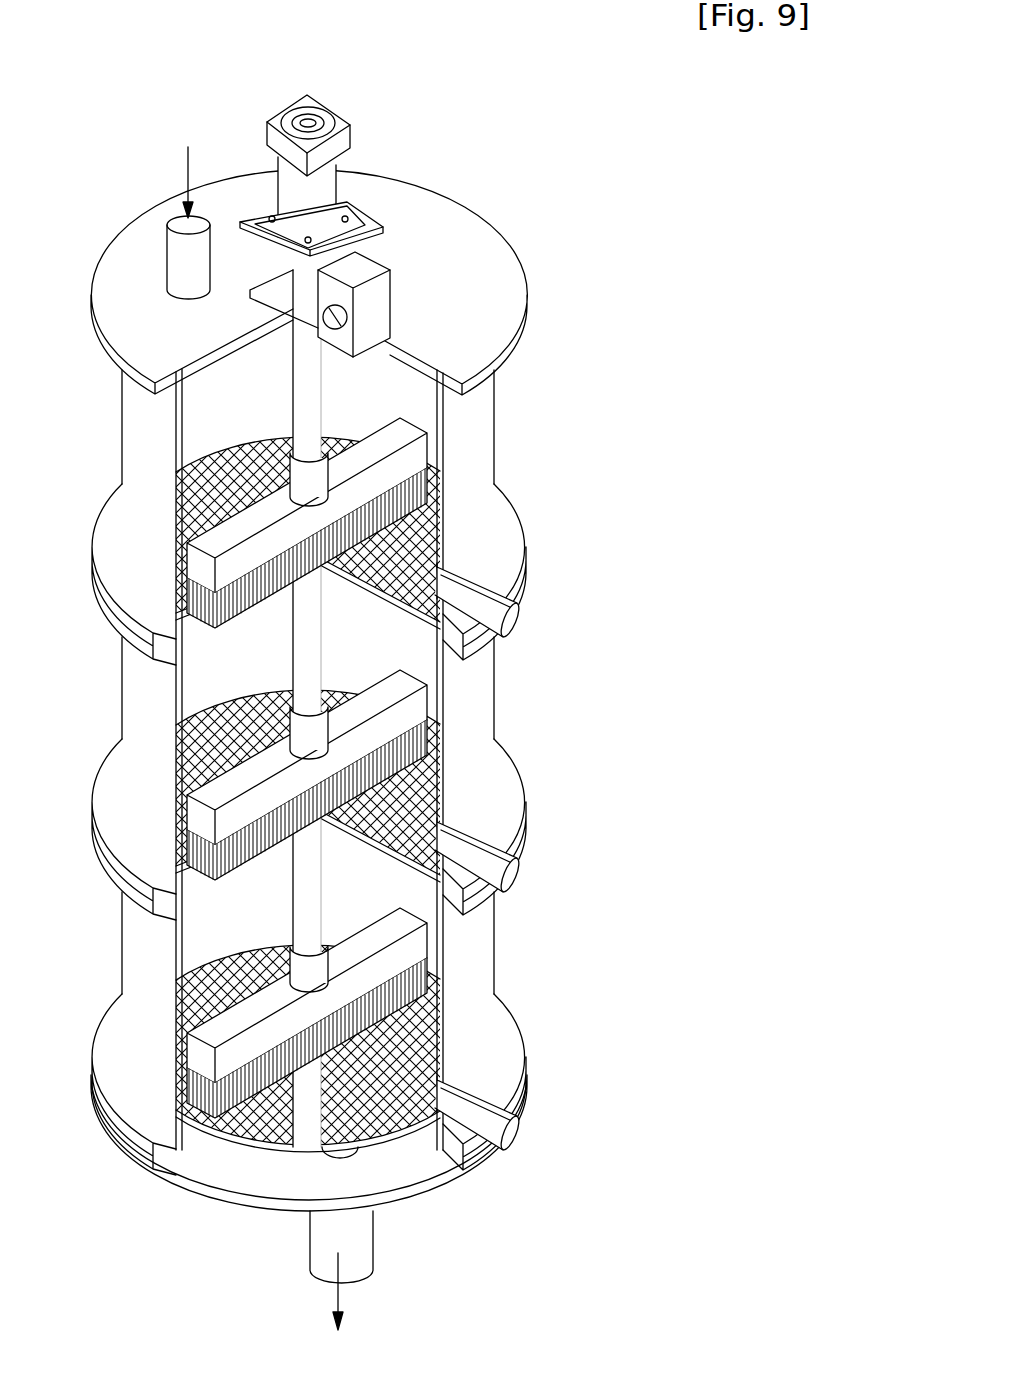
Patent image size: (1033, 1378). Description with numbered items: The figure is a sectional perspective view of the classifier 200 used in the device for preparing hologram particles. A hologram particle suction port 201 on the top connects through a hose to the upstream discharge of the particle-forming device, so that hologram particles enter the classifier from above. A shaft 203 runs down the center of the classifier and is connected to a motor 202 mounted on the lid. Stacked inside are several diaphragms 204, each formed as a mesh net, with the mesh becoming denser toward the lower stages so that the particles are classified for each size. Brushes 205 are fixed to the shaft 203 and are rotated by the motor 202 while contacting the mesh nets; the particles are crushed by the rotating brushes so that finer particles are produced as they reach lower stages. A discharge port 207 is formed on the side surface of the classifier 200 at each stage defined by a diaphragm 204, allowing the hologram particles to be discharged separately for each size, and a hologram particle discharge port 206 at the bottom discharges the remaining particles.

The classifier 200 is at (531, 221).
The hologram particle suction port 201 is at (172, 210).
The motor 202 is at (362, 124).
The shaft 203 is at (322, 396).
The diaphragm 204 is at (430, 527).
The brush 205 is at (428, 447).
The hologram particle discharge port 206 is at (373, 1268).
The discharge port 207 is at (528, 612).